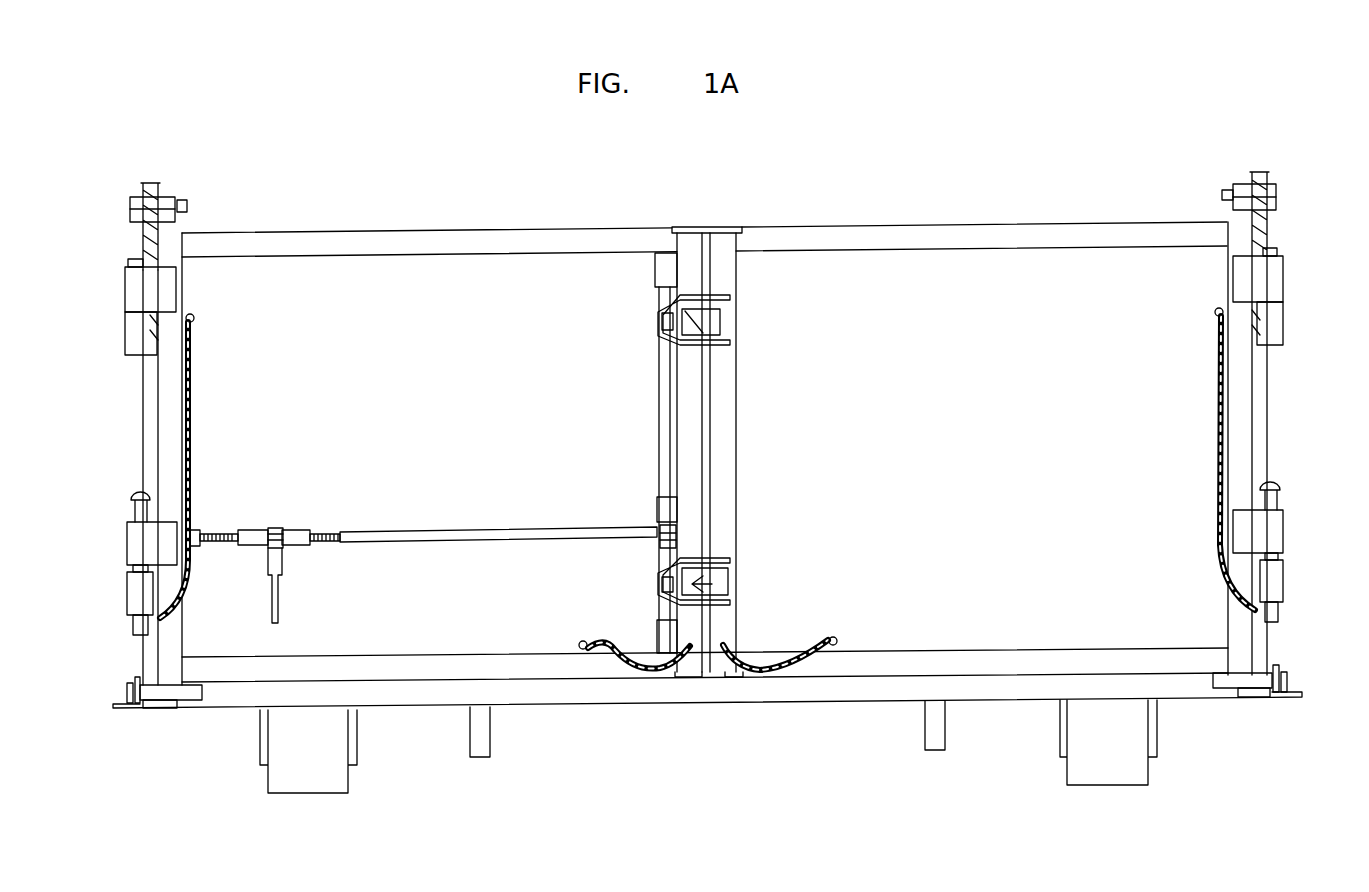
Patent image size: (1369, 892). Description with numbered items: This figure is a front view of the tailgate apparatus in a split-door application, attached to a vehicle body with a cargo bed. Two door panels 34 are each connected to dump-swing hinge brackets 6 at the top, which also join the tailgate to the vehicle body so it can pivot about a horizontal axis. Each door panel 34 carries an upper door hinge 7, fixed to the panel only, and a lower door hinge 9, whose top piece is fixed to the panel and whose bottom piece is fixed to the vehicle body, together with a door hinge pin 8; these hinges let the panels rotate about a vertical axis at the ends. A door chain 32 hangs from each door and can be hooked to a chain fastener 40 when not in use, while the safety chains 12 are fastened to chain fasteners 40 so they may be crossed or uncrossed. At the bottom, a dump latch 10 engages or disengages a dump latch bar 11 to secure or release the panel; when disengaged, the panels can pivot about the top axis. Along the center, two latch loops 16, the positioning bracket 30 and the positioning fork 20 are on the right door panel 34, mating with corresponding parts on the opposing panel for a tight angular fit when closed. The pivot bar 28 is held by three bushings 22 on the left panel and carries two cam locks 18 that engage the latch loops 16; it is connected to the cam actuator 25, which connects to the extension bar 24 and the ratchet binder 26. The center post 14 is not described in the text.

The dump-swing hinge bracket 6 is at (140, 183).
The upper door hinge 7 is at (138, 290).
The door hinge pin 8 is at (130, 495).
The lower door hinge 9 is at (140, 542).
The dump latch 10 is at (133, 672).
The dump latch bar 11 is at (170, 693).
The safety chain 12 is at (757, 675).
The center post 14 is at (704, 225).
The latch loop 16 is at (730, 297).
The cam lock 18 is at (662, 320).
The positioning fork 20 is at (705, 585).
The bushing 22 is at (665, 268).
The extension bar 24 is at (459, 533).
The cam actuator 25 is at (677, 533).
The ratchet binder 26 is at (278, 528).
The pivot bar 28 is at (663, 402).
The positioning bracket 30 is at (712, 320).
The door chain 32 is at (180, 405).
The door panel 34 is at (367, 317).
The chain fastener 40 is at (200, 325).